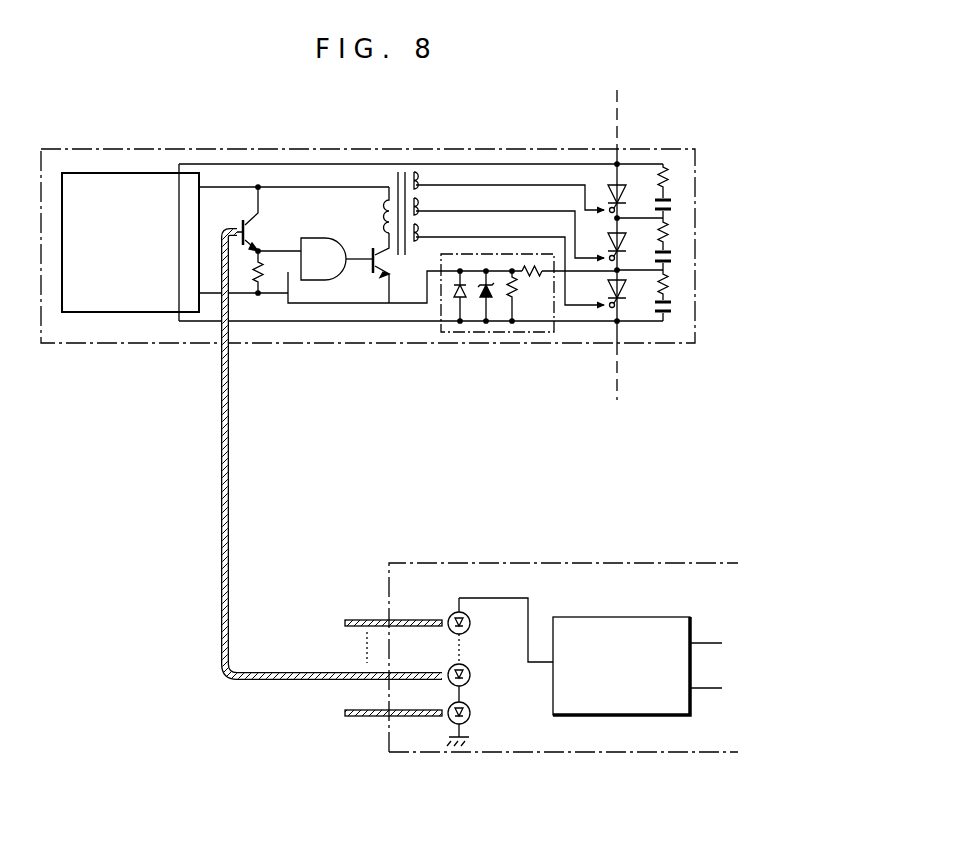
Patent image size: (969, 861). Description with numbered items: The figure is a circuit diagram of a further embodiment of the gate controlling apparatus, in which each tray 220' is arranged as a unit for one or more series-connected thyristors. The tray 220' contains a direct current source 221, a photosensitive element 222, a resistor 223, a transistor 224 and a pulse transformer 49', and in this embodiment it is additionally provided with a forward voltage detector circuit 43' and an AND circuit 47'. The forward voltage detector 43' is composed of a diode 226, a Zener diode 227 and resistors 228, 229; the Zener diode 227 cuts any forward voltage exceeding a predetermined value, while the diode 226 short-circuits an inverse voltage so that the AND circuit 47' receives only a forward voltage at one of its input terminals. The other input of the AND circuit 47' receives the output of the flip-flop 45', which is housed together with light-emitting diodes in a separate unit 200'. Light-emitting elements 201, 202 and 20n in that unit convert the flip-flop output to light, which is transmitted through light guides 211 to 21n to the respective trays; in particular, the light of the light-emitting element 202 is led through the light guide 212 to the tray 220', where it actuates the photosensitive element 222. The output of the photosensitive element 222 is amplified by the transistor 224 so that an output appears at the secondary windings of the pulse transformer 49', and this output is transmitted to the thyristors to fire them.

The tray 220' is at (368, 228).
The direct current source 221 is at (110, 313).
The photosensitive element 222 is at (254, 234).
The resistor 223 is at (263, 270).
The AND circuit 47' is at (337, 244).
The transistor 224 is at (386, 262).
The pulse transformer 49' is at (385, 188).
The forward voltage detector circuit 43' is at (497, 317).
The diode 226 is at (455, 296).
The Zener diode 227 is at (480, 298).
The resistor 228 is at (515, 298).
The resistor 229 is at (534, 275).
The light guide 212 is at (221, 538).
The unit 200' is at (563, 642).
The light guide 21n is at (375, 620).
The light guide 211 is at (370, 717).
The light-emitting element 20n is at (453, 612).
The light-emitting element 202 is at (470, 677).
The light-emitting element 201 is at (470, 713).
The flip-flop 45' is at (637, 649).